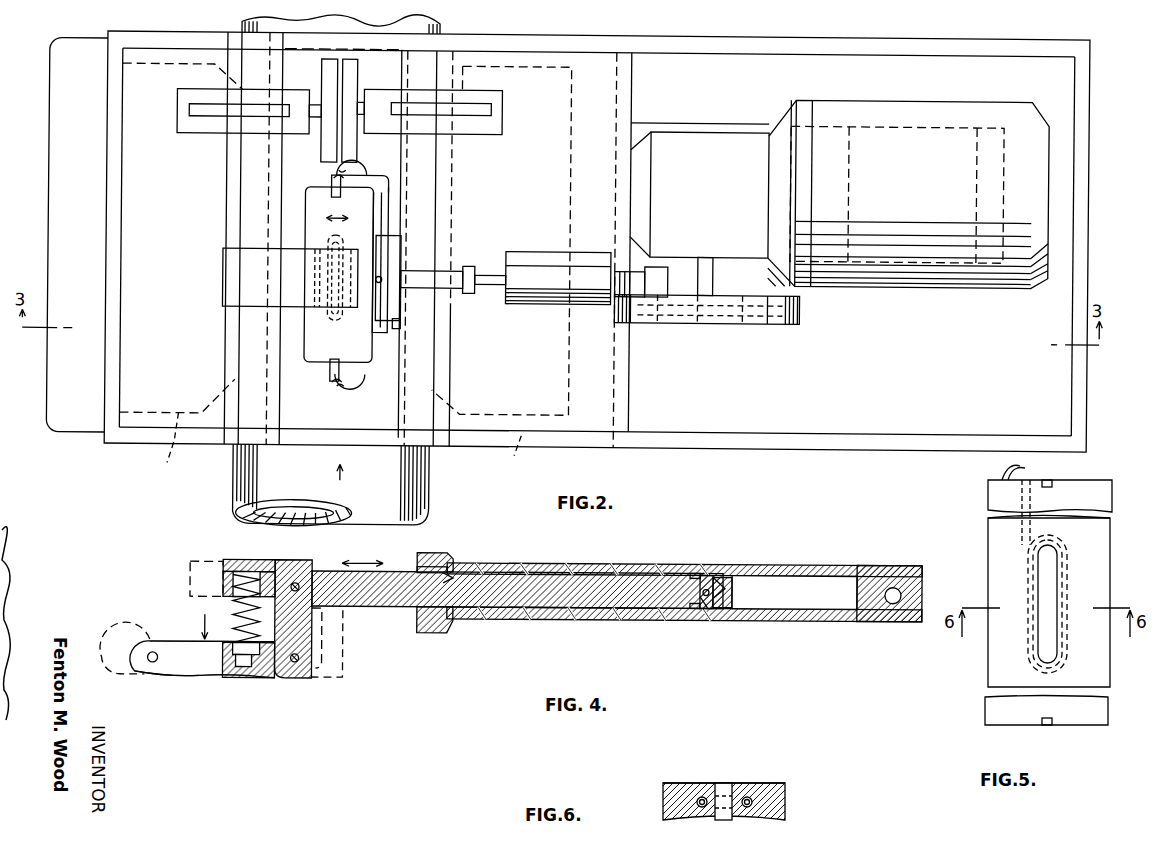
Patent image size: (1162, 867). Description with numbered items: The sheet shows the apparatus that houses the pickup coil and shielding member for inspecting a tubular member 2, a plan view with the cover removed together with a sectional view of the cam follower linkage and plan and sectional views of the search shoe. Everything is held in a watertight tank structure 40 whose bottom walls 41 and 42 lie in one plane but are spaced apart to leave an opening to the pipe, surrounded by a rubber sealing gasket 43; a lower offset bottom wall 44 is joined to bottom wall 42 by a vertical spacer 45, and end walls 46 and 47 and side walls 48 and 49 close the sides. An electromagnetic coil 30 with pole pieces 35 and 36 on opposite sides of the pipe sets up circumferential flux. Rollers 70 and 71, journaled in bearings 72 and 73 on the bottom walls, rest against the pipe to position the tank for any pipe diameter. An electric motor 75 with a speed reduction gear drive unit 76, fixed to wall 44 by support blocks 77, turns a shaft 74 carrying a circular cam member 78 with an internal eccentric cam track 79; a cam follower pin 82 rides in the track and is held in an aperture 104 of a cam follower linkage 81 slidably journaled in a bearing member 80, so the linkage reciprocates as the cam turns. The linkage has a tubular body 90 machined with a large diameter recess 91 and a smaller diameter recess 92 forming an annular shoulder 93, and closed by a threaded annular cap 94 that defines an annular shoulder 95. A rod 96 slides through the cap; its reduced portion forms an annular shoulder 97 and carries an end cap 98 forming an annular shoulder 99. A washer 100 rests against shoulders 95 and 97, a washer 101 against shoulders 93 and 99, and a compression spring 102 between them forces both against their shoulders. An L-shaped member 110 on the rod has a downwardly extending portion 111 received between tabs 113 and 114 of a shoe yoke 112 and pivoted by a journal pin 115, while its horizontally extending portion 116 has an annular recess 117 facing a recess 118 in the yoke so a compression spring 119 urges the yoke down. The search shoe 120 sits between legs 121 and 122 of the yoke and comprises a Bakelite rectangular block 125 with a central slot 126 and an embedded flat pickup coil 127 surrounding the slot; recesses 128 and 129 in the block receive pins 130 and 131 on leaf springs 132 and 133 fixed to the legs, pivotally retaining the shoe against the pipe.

In FIG. 2, the tubular member 2 is at (430, 500).
In FIG. 2, the electromagnetic coil 30 is at (50, 238).
In FIG. 2, the pole piece 35 is at (172, 450).
In FIG. 2, the pole piece 36 is at (520, 448).
In FIG. 2, the tank structure 40 is at (792, 455).
In FIG. 2, the bottom wall 41 is at (180, 235).
In FIG. 2, the bottom wall 42 is at (532, 207).
In FIG. 2, the rubber sealing gasket 43 is at (300, 433).
In FIG. 2, the lower offset bottom wall 44 is at (960, 379).
In FIG. 2, the vertical spacer 45 is at (634, 90).
In FIG. 2, the end wall 46 is at (123, 290).
In FIG. 2, the end wall 47 is at (1075, 78).
In FIG. 2, the side wall 48 is at (744, 50).
In FIG. 2, the side wall 49 is at (738, 427).
In FIG. 2, the roller 70 is at (350, 70).
In FIG. 2, the roller 71 is at (322, 70).
In FIG. 2, the bearing 72 is at (480, 90).
In FIG. 2, the bearing 73 is at (190, 88).
In FIG. 2, the shaft 74 is at (713, 282).
In FIG. 2, the electric motor 75 is at (927, 100).
In FIG. 2, the speed reduction gear drive unit 76 is at (698, 127).
In FIG. 2, the support block 77 is at (752, 127).
In FIG. 2, the circular cam member 78 is at (795, 318).
In FIG. 2, the eccentric cam track 79 is at (786, 296).
In FIG. 2, the bearing member 80 is at (548, 300).
In FIG. 2, the cam follower linkage 81 is at (500, 299).
In FIG. 4, the cam follower linkage 81 is at (461, 553).
In FIG. 2, the cam follower pin 82 is at (670, 268).
In FIG. 4, the tubular body 90 is at (722, 572).
In FIG. 4, the large diameter recess 91 is at (562, 570).
In FIG. 4, the smaller diameter recess 92 is at (795, 586).
In FIG. 4, the annular shoulder 93 is at (700, 608).
In FIG. 4, the annular cap 94 is at (436, 552).
In FIG. 4, the annular shoulder 95 is at (422, 630).
In FIG. 2, the rod 96 is at (450, 272).
In FIG. 4, the rod 96 is at (360, 610).
In FIG. 4, the annular shoulder 97 is at (417, 568).
In FIG. 4, the end cap 98 is at (732, 592).
In FIG. 4, the annular shoulder 99 is at (706, 572).
In FIG. 4, the washer 100 is at (418, 606).
In FIG. 4, the washer 101 is at (693, 570).
In FIG. 4, the compression spring 102 is at (552, 618).
In FIG. 4, the aperture 104 is at (922, 592).
In FIG. 2, the L-shaped member 110 is at (396, 262).
In FIG. 4, the L-shaped member 110 is at (300, 560).
In FIG. 4, the downwardly extending portion 111 is at (322, 632).
In FIG. 2, the shoe yoke 112 is at (394, 210).
In FIG. 4, the shoe yoke 112 is at (200, 675).
In FIG. 2, the tab 113 is at (396, 240).
In FIG. 4, the tab 113 is at (282, 678).
In FIG. 2, the tab 114 is at (399, 320).
In FIG. 4, the journal pin 115 is at (297, 664).
In FIG. 4, the horizontally extending portion 116 is at (222, 560).
In FIG. 4, the annular recess 117 is at (230, 580).
In FIG. 4, the recess 118 is at (230, 642).
In FIG. 4, the compression spring 119 is at (238, 600).
In FIG. 2, the search shoe 120 is at (296, 338).
In FIG. 5, the search shoe 120 is at (980, 678).
In FIG. 6, the search shoe 120 is at (674, 783).
In FIG. 2, the leg 121 is at (358, 384).
In FIG. 2, the leg 122 is at (390, 168).
In FIG. 4, the leg 122 is at (172, 642).
In FIG. 5, the rectangular block 125 is at (975, 522).
In FIG. 6, the rectangular block 125 is at (765, 783).
In FIG. 5, the slot 126 is at (1055, 555).
In FIG. 6, the slot 126 is at (722, 783).
In FIG. 5, the pickup coil 127 is at (1028, 648).
In FIG. 6, the pickup coil 127 is at (716, 820).
In FIG. 5, the recess 128 is at (1060, 488).
In FIG. 5, the recess 129 is at (1042, 714).
In FIG. 2, the pin 130 is at (333, 186).
In FIG. 2, the pin 131 is at (333, 369).
In FIG. 2, the leaf spring 132 is at (372, 153).
In FIG. 2, the leaf spring 133 is at (344, 386).